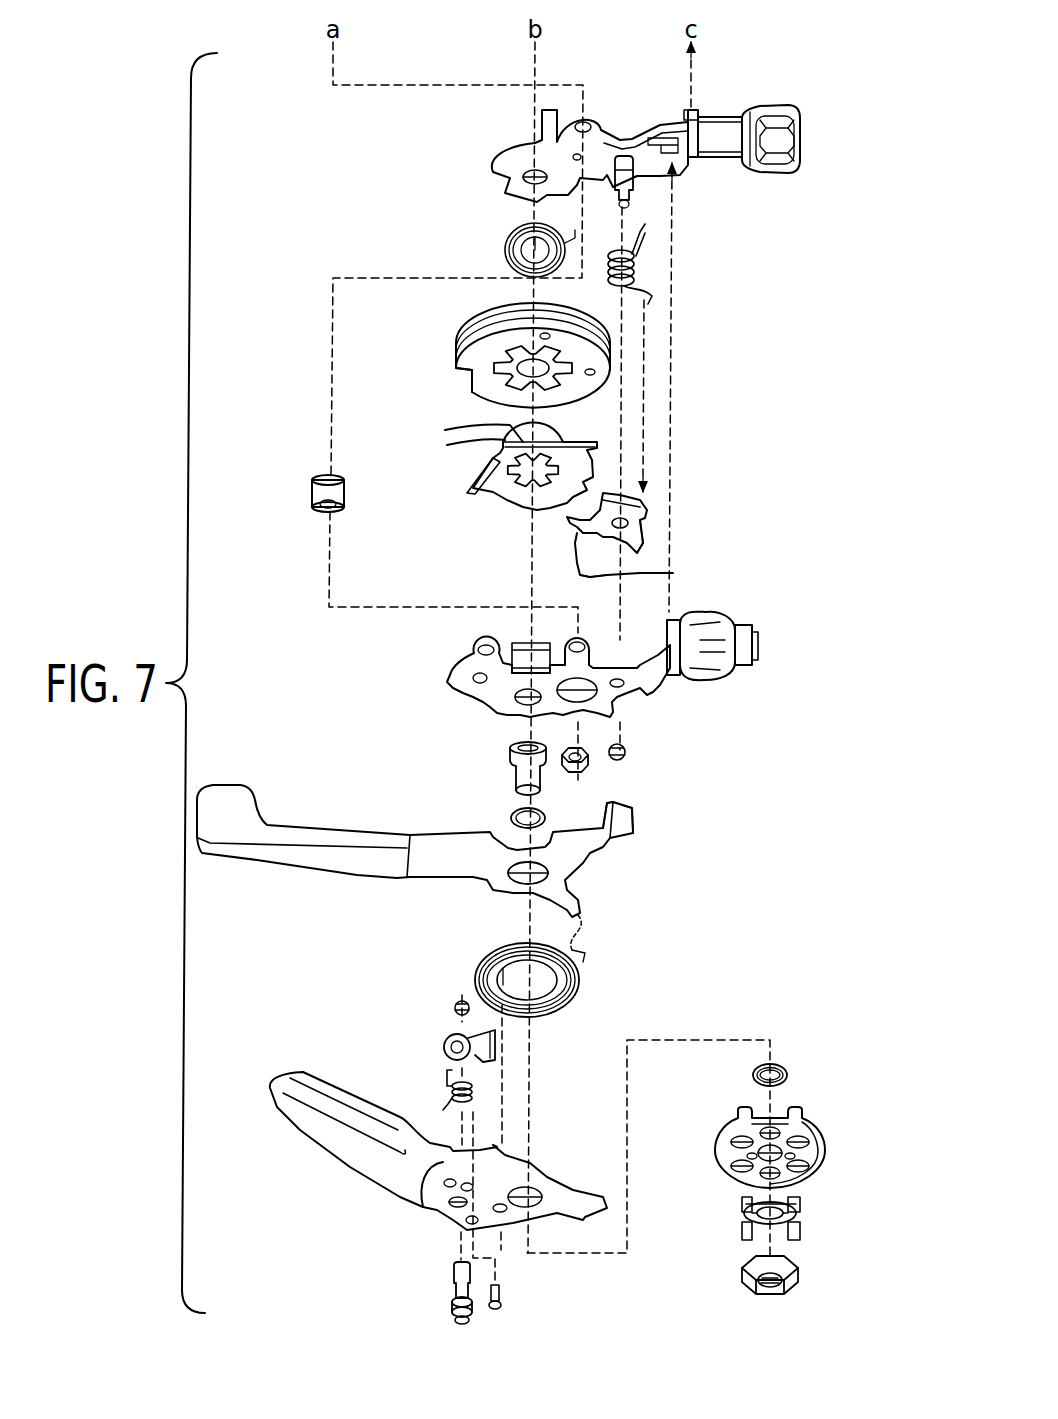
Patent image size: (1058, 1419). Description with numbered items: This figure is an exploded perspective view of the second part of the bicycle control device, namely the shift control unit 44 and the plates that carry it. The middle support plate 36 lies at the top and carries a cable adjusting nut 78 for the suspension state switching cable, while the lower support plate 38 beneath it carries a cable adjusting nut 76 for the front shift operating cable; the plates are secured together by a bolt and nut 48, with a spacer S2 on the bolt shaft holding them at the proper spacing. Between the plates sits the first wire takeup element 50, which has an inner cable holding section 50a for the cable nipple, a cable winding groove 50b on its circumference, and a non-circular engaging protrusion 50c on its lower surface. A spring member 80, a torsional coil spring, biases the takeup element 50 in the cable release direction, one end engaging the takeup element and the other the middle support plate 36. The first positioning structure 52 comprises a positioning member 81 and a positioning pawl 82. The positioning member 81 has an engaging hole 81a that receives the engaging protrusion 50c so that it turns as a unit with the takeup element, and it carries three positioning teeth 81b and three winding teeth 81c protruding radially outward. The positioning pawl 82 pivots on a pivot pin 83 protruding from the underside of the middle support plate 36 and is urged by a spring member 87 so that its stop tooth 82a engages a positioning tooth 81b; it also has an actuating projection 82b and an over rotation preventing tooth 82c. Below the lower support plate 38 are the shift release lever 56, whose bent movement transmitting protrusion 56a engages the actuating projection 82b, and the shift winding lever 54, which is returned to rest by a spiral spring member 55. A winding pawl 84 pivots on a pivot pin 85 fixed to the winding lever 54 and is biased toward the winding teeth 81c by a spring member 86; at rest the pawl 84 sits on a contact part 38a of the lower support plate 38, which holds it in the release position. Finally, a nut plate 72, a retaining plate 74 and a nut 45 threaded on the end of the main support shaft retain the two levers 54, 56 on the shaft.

The middle support plate 36 is at (478, 176).
The cable adjusting nut 78 is at (720, 108).
The pivot pin 83 is at (640, 200).
The spring member 80 is at (505, 240).
The spring member 87 is at (642, 258).
The first wire takeup element 50 is at (552, 357).
The inner cable holding section 50a is at (455, 378).
The cable winding groove 50b is at (613, 333).
The engaging protrusion 50c is at (500, 378).
The positioning member 81 is at (558, 480).
The engaging hole 81a is at (485, 488).
The positioning teeth 81b is at (590, 504).
The winding teeth 81c is at (464, 433).
The positioning pawl 82 is at (593, 530).
The stop tooth 82a is at (578, 560).
The actuating projection 82b is at (642, 552).
The over rotation preventing tooth 82c is at (645, 478).
The first positioning structure 52 is at (569, 505).
The spacer S2 is at (312, 494).
The lower support plate 38 is at (505, 715).
The contact part 38a is at (490, 717).
The nut 48 is at (593, 765).
The shift control unit 44 is at (740, 741).
The cable adjusting nut 76 is at (738, 610).
The shift release lever 56 is at (465, 799).
The movement transmitting protrusion 56a is at (617, 817).
The spring member 55 is at (583, 978).
The shift winding lever 54 is at (265, 1072).
The winding pawl 84 is at (445, 1040).
The spring member 86 is at (445, 1090).
The pivot pin 85 is at (452, 1280).
The retaining plate 74 is at (822, 1127).
The nut plate 72 is at (802, 1213).
The nut 45 is at (795, 1276).